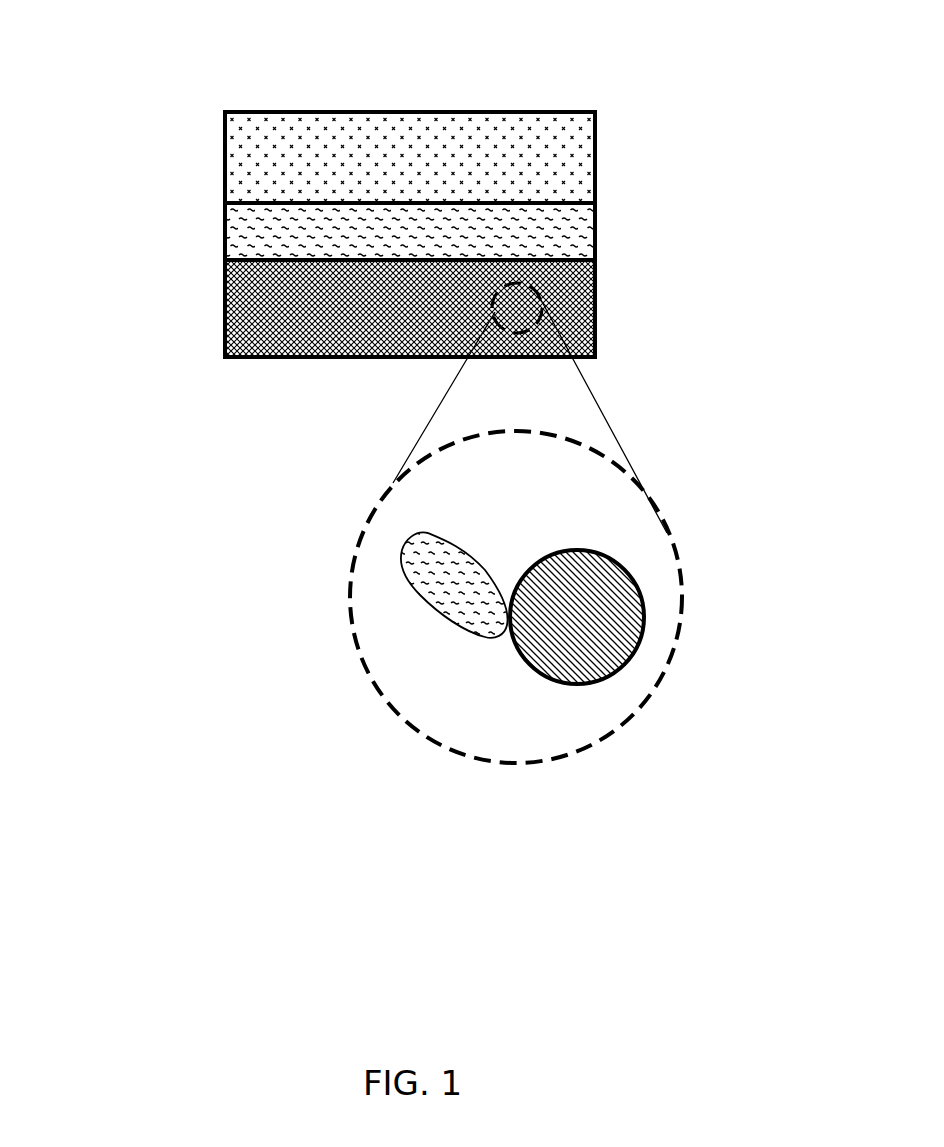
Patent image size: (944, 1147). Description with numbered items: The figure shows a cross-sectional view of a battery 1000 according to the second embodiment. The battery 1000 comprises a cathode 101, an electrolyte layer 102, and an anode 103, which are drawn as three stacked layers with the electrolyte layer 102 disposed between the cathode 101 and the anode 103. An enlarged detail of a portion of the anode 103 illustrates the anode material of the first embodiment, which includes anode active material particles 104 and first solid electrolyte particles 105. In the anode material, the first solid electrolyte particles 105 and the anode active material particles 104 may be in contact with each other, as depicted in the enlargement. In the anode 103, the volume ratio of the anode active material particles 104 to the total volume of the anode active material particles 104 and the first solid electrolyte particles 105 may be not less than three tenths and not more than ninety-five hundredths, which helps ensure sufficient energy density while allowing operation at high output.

The battery 1000 is at (463, 43).
The cathode 101 is at (272, 137).
The electrolyte layer 102 is at (263, 230).
The anode 103 is at (272, 308).
The anode active material particles 104 is at (600, 614).
The first solid electrolyte particles 105 is at (410, 576).